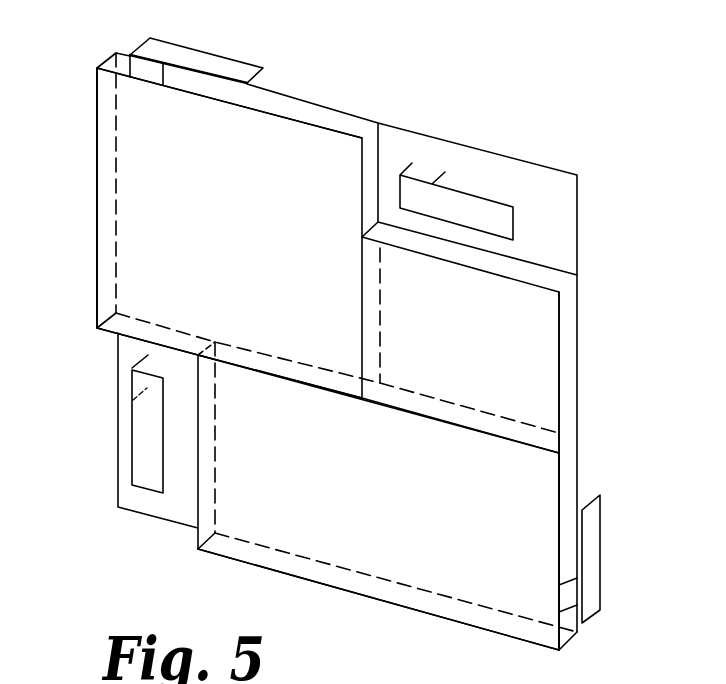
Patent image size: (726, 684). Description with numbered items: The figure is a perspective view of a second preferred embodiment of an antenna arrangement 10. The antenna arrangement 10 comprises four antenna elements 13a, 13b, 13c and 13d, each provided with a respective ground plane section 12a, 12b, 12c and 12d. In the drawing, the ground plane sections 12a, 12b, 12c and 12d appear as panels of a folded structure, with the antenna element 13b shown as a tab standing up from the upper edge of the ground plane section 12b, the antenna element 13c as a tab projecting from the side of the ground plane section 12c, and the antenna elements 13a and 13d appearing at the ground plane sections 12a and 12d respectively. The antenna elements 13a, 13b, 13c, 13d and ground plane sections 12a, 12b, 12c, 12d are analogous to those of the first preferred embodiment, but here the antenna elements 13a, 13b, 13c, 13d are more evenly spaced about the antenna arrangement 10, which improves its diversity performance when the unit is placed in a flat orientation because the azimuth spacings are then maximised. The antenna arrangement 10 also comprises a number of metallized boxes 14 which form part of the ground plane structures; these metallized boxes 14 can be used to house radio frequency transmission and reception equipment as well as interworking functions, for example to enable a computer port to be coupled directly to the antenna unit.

The antenna arrangement 10 is at (641, 187).
The ground plane section 12a is at (168, 508).
The ground plane section 12b is at (272, 104).
The ground plane section 12c is at (568, 487).
The ground plane section 12d is at (508, 180).
The antenna element 13a is at (140, 440).
The antenna element 13b is at (162, 56).
The antenna element 13c is at (590, 557).
The antenna element 13d is at (442, 203).
The metallized box 14 is at (110, 195).